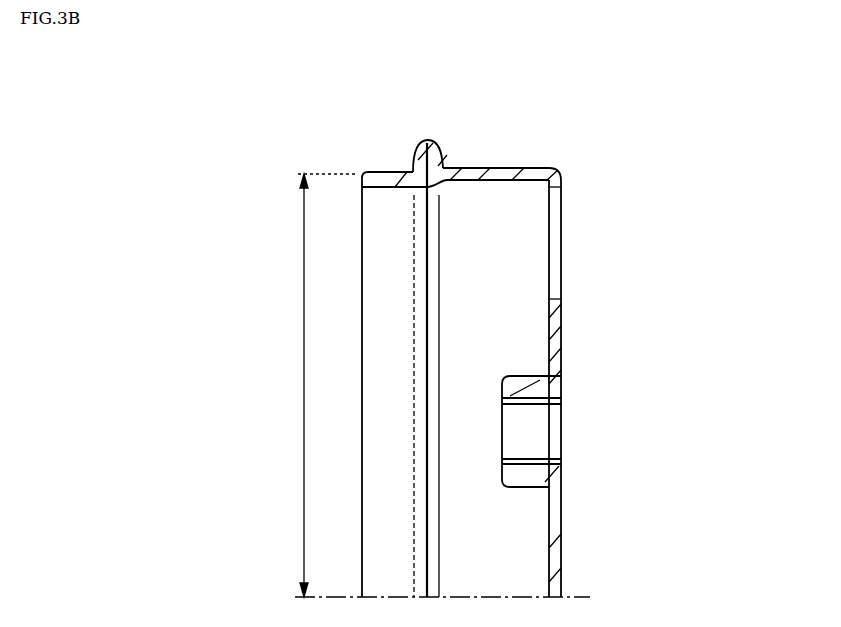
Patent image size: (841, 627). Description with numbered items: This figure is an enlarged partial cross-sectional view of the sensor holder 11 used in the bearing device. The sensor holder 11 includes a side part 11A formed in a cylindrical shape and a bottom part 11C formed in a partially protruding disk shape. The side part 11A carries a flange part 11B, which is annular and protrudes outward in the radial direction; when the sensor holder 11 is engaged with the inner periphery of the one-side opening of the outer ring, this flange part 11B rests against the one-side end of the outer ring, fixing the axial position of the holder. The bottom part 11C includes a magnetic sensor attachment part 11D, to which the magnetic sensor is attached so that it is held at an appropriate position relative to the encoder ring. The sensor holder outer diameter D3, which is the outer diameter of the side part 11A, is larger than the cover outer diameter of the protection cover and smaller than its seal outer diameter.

The sensor holder 11 is at (510, 142).
The side part 11A is at (386, 171).
The flange part 11B is at (428, 141).
The bottom part 11C is at (556, 333).
The magnetic sensor attachment part 11D is at (548, 484).
The sensor holder outer diameter D3 is at (313, 385).